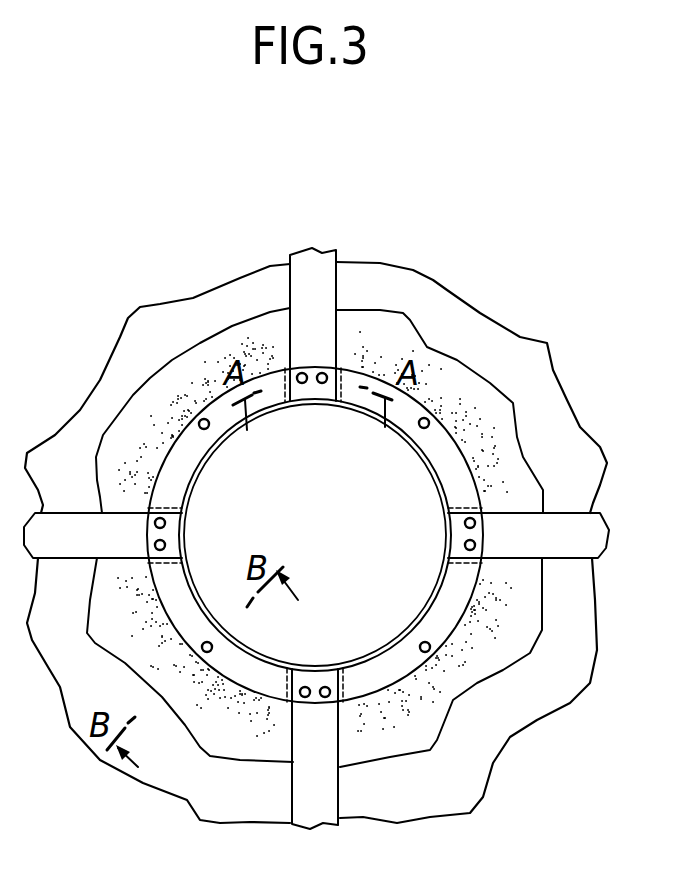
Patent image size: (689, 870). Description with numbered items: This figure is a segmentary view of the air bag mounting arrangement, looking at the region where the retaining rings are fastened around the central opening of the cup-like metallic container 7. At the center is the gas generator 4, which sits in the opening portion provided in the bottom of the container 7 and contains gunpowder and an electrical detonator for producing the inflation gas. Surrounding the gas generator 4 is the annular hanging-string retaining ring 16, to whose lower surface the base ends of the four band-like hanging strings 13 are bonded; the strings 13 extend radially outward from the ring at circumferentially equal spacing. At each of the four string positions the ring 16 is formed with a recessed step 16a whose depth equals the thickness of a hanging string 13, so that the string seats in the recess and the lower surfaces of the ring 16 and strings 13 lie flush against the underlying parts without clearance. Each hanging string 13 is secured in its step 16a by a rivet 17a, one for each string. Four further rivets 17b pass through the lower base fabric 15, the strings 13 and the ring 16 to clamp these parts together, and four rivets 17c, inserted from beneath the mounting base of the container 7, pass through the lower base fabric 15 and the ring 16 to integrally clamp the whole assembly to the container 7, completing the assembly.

The gas generator 4 is at (324, 547).
The container 7 is at (570, 417).
The hanging strings 13 is at (330, 290).
The lower base fabric 15 is at (181, 366).
The hanging-string retaining ring 16 is at (453, 447).
The step 16a is at (347, 374).
The rivets 17a is at (299, 384).
The rivets 17b is at (324, 384).
The rivets 17c is at (209, 429).